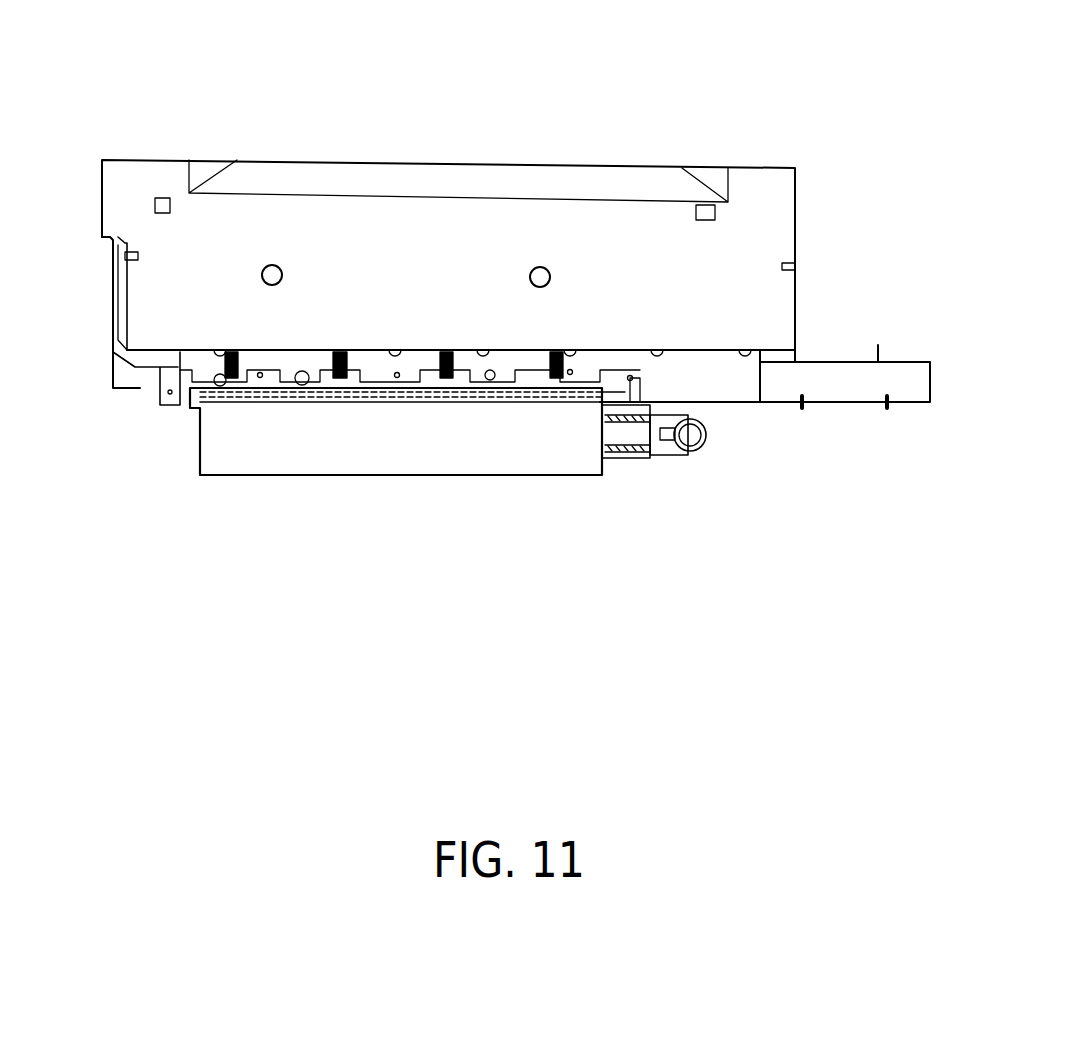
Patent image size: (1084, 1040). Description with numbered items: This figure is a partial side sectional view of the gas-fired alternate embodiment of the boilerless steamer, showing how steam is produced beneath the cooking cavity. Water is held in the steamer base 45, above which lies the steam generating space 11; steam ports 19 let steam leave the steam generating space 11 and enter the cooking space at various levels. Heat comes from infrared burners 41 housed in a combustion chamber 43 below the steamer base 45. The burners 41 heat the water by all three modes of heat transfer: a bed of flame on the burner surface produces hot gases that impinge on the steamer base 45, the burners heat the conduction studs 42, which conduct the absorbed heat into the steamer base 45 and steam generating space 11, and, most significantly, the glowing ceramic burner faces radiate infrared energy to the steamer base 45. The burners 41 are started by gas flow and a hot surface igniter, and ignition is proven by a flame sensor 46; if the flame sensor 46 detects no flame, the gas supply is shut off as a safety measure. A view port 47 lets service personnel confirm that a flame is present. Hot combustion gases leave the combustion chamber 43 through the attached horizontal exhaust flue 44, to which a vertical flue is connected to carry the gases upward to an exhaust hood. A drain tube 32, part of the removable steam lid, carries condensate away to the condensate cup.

The steam generating space 11 is at (713, 247).
The steam ports 19 is at (540, 267).
The drain tube 32 is at (215, 373).
The infrared burners 41 is at (563, 474).
The conduction studs 42 is at (342, 385).
The combustion chamber 43 is at (693, 373).
The exhaust flue 44 is at (842, 375).
The steamer base 45 is at (612, 345).
The flame sensor 46 is at (490, 381).
The view port 47 is at (303, 386).